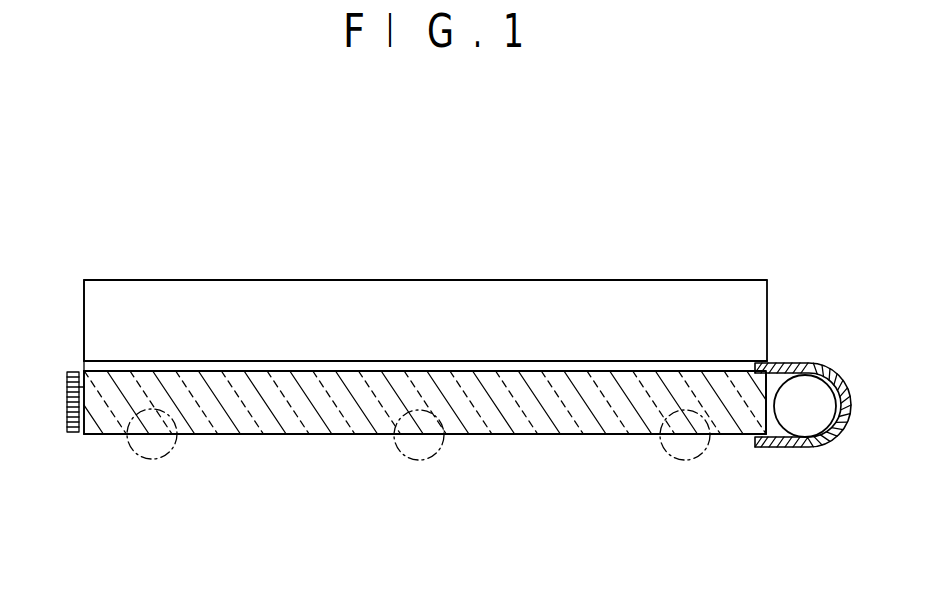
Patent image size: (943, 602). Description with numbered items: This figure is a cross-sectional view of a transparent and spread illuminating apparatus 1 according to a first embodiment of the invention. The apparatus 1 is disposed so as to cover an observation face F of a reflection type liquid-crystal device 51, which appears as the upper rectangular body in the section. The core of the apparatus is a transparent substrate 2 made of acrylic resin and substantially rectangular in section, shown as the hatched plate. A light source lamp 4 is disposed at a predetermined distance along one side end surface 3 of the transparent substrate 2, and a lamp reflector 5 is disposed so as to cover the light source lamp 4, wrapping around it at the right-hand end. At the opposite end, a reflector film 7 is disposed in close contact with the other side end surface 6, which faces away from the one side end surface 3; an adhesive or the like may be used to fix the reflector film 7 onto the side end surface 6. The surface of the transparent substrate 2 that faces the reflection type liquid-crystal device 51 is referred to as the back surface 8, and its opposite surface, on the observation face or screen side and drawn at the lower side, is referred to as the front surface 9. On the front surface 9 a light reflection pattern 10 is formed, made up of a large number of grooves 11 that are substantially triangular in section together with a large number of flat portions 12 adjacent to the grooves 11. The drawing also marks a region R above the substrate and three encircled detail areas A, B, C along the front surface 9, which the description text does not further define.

The transparent and spread illuminating apparatus 1 is at (823, 357).
The transparent substrate 2 is at (503, 387).
The one side end surface 3 is at (770, 440).
The light source lamp 4 is at (820, 430).
The lamp reflector 5 is at (840, 388).
The other side end surface 6 is at (65, 380).
The reflector film 7 is at (66, 410).
The back surface 8 is at (302, 370).
The front surface 9 is at (93, 436).
The light reflection pattern 10 is at (348, 437).
The grooves 11 is at (505, 435).
The flat portions 12 is at (620, 437).
The reflection type liquid-crystal device 51 is at (665, 288).
The reflection sheet R is at (200, 283).
The observation face F is at (601, 362).
The detail region A is at (690, 453).
The detail region B is at (427, 457).
The detail region C is at (177, 447).